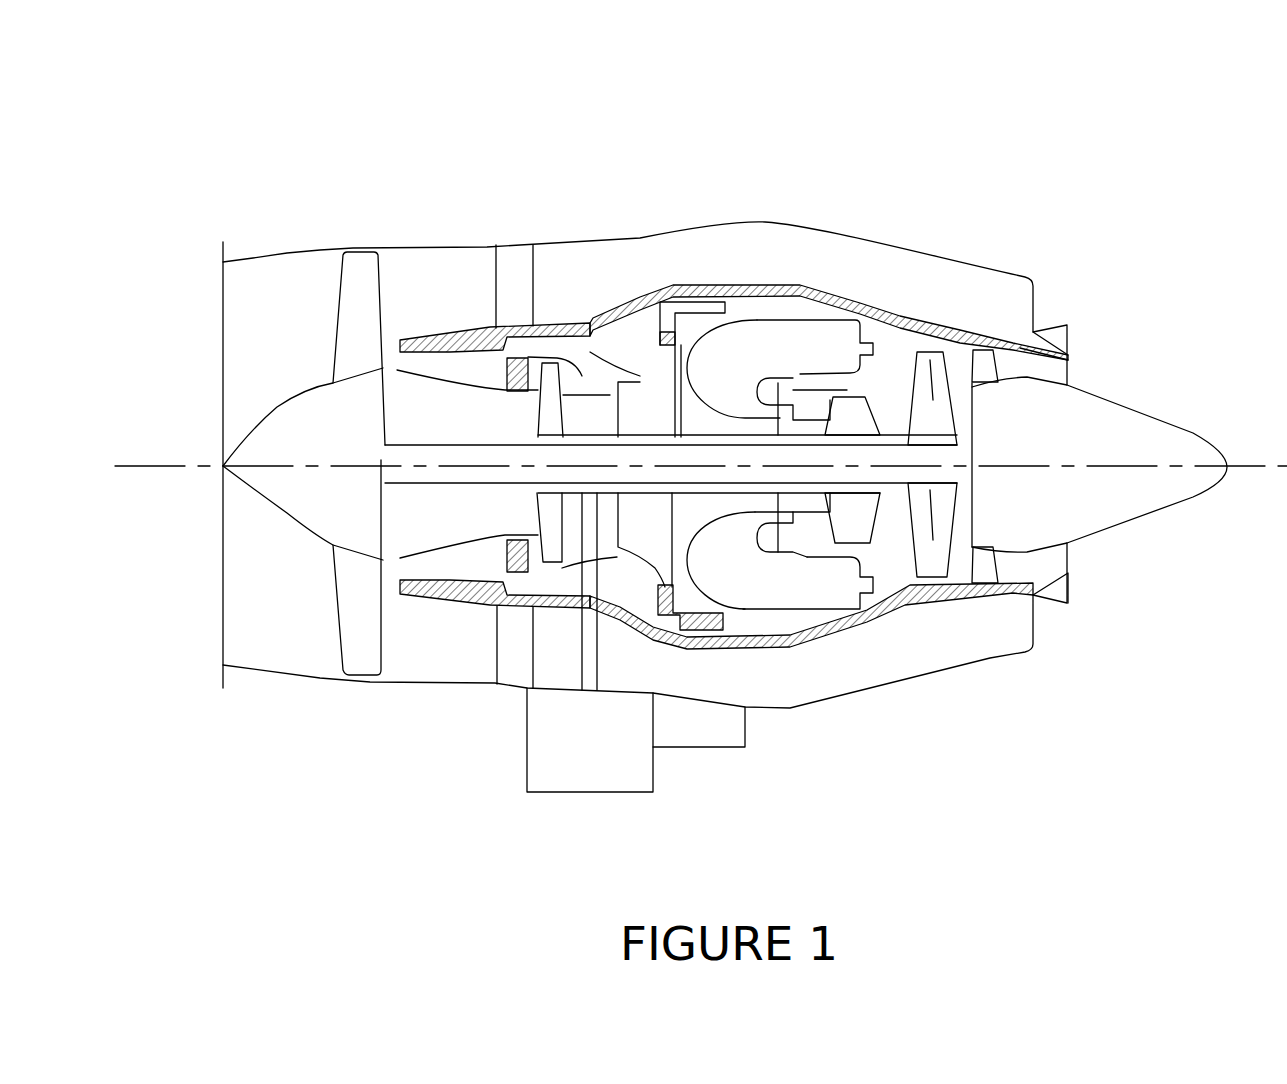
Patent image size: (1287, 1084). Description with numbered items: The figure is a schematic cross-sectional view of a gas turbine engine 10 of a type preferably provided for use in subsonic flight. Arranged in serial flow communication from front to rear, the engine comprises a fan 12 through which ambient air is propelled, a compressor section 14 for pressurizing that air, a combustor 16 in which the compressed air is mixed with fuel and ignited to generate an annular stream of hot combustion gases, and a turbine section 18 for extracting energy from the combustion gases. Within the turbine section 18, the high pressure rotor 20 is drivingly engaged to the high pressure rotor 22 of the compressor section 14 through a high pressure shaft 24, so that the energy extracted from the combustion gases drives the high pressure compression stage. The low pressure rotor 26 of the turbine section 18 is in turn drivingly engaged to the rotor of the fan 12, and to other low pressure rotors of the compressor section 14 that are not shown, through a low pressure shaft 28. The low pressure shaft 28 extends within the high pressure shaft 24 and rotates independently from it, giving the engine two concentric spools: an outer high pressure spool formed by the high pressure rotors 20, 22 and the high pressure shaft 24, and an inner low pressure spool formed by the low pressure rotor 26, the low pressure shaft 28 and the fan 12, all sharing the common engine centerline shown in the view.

The gas turbine engine 10 is at (913, 163).
The fan 12 is at (353, 600).
The compressor section 14 is at (581, 375).
The combustor 16 is at (776, 337).
The turbine section 18 is at (870, 530).
The high pressure rotor 20 is at (873, 385).
The high pressure rotor 22 is at (647, 393).
The high pressure shaft 24 is at (784, 373).
The low pressure rotor 26 is at (903, 382).
The low pressure shaft 28 is at (440, 487).